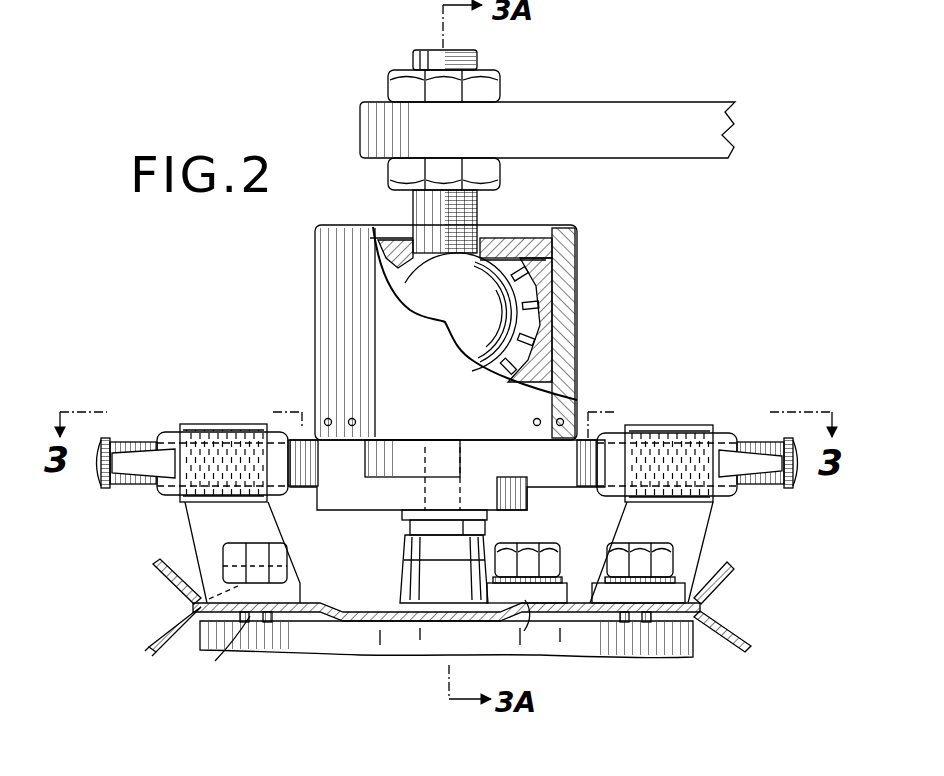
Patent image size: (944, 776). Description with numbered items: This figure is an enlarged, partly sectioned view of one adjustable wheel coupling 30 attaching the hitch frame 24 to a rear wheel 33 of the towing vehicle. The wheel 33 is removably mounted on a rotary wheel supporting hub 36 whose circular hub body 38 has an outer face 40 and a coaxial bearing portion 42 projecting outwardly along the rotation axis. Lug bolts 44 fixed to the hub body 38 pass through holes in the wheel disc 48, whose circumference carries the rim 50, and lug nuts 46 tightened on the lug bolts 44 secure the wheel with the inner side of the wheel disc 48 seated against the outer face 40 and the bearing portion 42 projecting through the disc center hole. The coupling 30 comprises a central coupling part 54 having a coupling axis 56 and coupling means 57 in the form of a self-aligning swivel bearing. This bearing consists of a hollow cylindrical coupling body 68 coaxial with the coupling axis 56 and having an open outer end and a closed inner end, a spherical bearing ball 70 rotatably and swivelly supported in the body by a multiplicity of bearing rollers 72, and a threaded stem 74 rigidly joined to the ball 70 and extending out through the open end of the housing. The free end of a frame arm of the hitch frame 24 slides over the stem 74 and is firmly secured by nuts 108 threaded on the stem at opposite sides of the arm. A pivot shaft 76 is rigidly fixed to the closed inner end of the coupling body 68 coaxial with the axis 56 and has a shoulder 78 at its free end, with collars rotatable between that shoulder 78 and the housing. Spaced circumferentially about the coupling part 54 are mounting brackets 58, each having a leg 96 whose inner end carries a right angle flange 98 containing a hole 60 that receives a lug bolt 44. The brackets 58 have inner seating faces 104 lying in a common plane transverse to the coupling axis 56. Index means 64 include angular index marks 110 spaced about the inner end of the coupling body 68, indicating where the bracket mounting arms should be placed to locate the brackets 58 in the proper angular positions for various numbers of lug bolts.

The hitch frame 24 is at (628, 100).
The adjustable wheel coupling 30 is at (312, 307).
The rear wheel 33 is at (160, 570).
The wheel supporting hub 36 is at (250, 655).
The hub body 38 is at (695, 640).
The outer face 40 is at (580, 620).
The bearing portion 42 is at (405, 573).
The lug bolt 44 is at (217, 650).
The lug nut 46 is at (552, 556).
The wheel disc 48 is at (318, 613).
The rim 50 is at (735, 575).
The central coupling part 54 is at (578, 290).
The coupling axis 56 is at (443, 21).
The coupling means 57 is at (427, 300).
The wheel coupling mounting bracket 58 is at (184, 518).
The hole 60 is at (190, 605).
The index means 64 is at (346, 416).
The coupling body 68 is at (315, 253).
The bearing ball 70 is at (448, 326).
The bearing rollers 72 is at (530, 345).
The threaded stem 74 is at (473, 52).
The pivot shaft 76 is at (425, 452).
The shoulder 78 is at (402, 513).
The leg 96 is at (486, 527).
The right angle flange 98 is at (510, 627).
The seating face 104 is at (268, 616).
The nut 108 is at (495, 88).
The angular index marks 110 is at (562, 418).